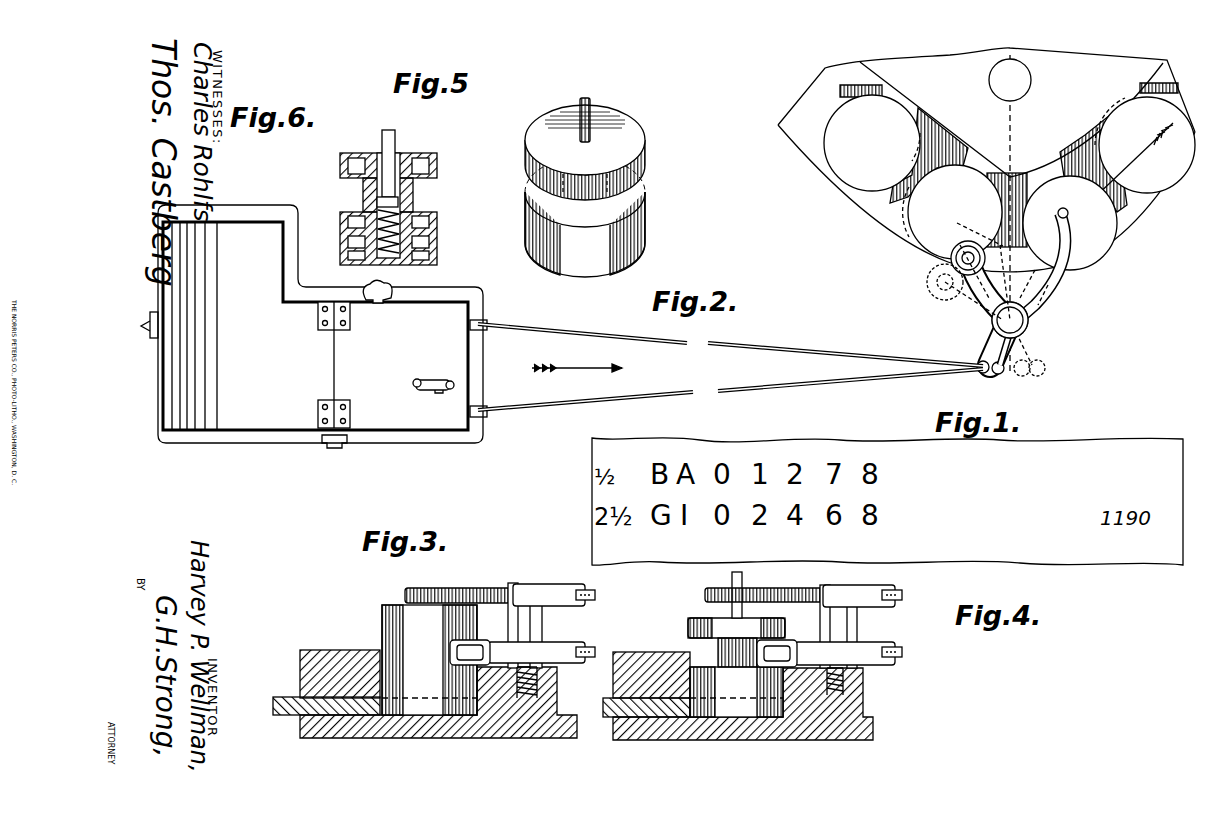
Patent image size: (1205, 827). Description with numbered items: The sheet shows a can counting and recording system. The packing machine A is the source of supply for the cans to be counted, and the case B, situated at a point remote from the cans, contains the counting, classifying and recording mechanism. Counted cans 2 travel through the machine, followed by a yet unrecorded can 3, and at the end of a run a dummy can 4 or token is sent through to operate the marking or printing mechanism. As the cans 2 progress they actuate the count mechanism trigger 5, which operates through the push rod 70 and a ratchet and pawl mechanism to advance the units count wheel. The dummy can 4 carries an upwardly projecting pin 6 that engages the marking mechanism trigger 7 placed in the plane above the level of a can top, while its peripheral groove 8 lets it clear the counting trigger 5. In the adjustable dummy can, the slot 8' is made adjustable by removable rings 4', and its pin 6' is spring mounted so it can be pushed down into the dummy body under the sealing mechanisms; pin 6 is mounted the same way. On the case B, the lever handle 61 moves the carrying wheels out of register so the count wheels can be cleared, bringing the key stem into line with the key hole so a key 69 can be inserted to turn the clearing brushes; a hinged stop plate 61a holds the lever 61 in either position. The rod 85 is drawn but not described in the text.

In FIG. 1, the packing machine A is at (986, 210).
In FIG. 3, the packing machine A is at (425, 683).
In FIG. 4, the packing machine A is at (738, 683).
In FIG. 2, the case B is at (314, 326).
In FIG. 1, the counted cans 2 is at (913, 177).
In FIG. 3, the counted cans 2 is at (429, 660).
In FIG. 1, the unrecorded can 3 is at (1092, 116).
In FIG. 1, the dummy can 4 is at (1047, 291).
In FIG. 4, the dummy can 4 is at (736, 692).
In FIG. 5, the dummy can 4 is at (585, 152).
In FIG. 6, the removable rings 4' is at (403, 209).
In FIG. 1, the count mechanism trigger 5 is at (977, 280).
In FIG. 3, the count mechanism trigger 5 is at (504, 652).
In FIG. 4, the count mechanism trigger 5 is at (811, 653).
In FIG. 1, the pin 6 is at (1061, 200).
In FIG. 4, the pin 6 is at (734, 593).
In FIG. 5, the pin 6 is at (591, 109).
In FIG. 6, the pin 6' is at (389, 179).
In FIG. 1, the marking mechanism trigger 7 is at (1032, 305).
In FIG. 3, the marking mechanism trigger 7 is at (485, 580).
In FIG. 4, the marking mechanism trigger 7 is at (781, 620).
In FIG. 4, the peripheral groove 8 is at (736, 642).
In FIG. 5, the peripheral groove 8 is at (595, 217).
In FIG. 6, the slot 8' is at (408, 205).
In FIG. 2, the lever handle 61 is at (430, 393).
In FIG. 2, the hinged stop plate 61a is at (436, 367).
In FIG. 2, the key 69 is at (391, 287).
In FIG. 1, the push rod 70 is at (828, 360).
In FIG. 2, the push rod 70 is at (582, 333).
In FIG. 3, the push rod 70 is at (556, 670).
In FIG. 4, the push rod 70 is at (863, 668).
In FIG. 1, the rod 85 is at (842, 380).
In FIG. 2, the rod 85 is at (585, 401).
In FIG. 3, the rod 85 is at (566, 596).
In FIG. 4, the rod 85 is at (876, 597).